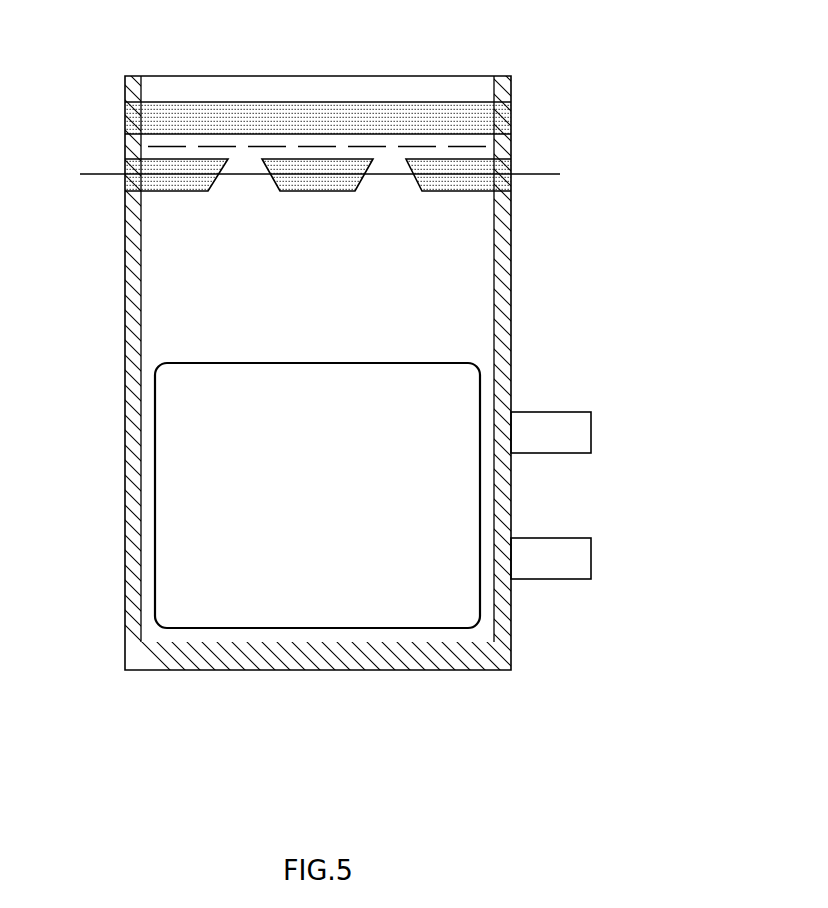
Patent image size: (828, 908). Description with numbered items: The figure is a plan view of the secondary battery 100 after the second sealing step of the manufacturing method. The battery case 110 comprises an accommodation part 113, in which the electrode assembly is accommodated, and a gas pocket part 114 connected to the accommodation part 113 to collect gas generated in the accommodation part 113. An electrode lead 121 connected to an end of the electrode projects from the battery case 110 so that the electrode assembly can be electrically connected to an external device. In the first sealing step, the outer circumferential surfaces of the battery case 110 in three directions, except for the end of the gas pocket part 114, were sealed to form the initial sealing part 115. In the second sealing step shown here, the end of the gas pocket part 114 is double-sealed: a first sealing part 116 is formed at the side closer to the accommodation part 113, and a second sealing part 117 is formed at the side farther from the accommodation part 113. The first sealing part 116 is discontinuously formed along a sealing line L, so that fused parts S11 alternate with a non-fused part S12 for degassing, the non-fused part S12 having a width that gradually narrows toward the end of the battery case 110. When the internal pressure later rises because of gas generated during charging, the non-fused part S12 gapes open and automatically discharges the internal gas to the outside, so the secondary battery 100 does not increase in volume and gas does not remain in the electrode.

The secondary battery 100 is at (710, 52).
The battery case 110 is at (414, 454).
The accommodation part 113 is at (318, 605).
The gas pocket part 114 is at (172, 297).
The initial sealing part 115 is at (150, 654).
The first sealing part 116 is at (345, 183).
The second sealing part 117 is at (477, 115).
The electrode lead 121 is at (555, 572).
The fused part S11 is at (186, 205).
The non-fused part for degassing S12 is at (242, 195).
The sealing line L is at (327, 174).